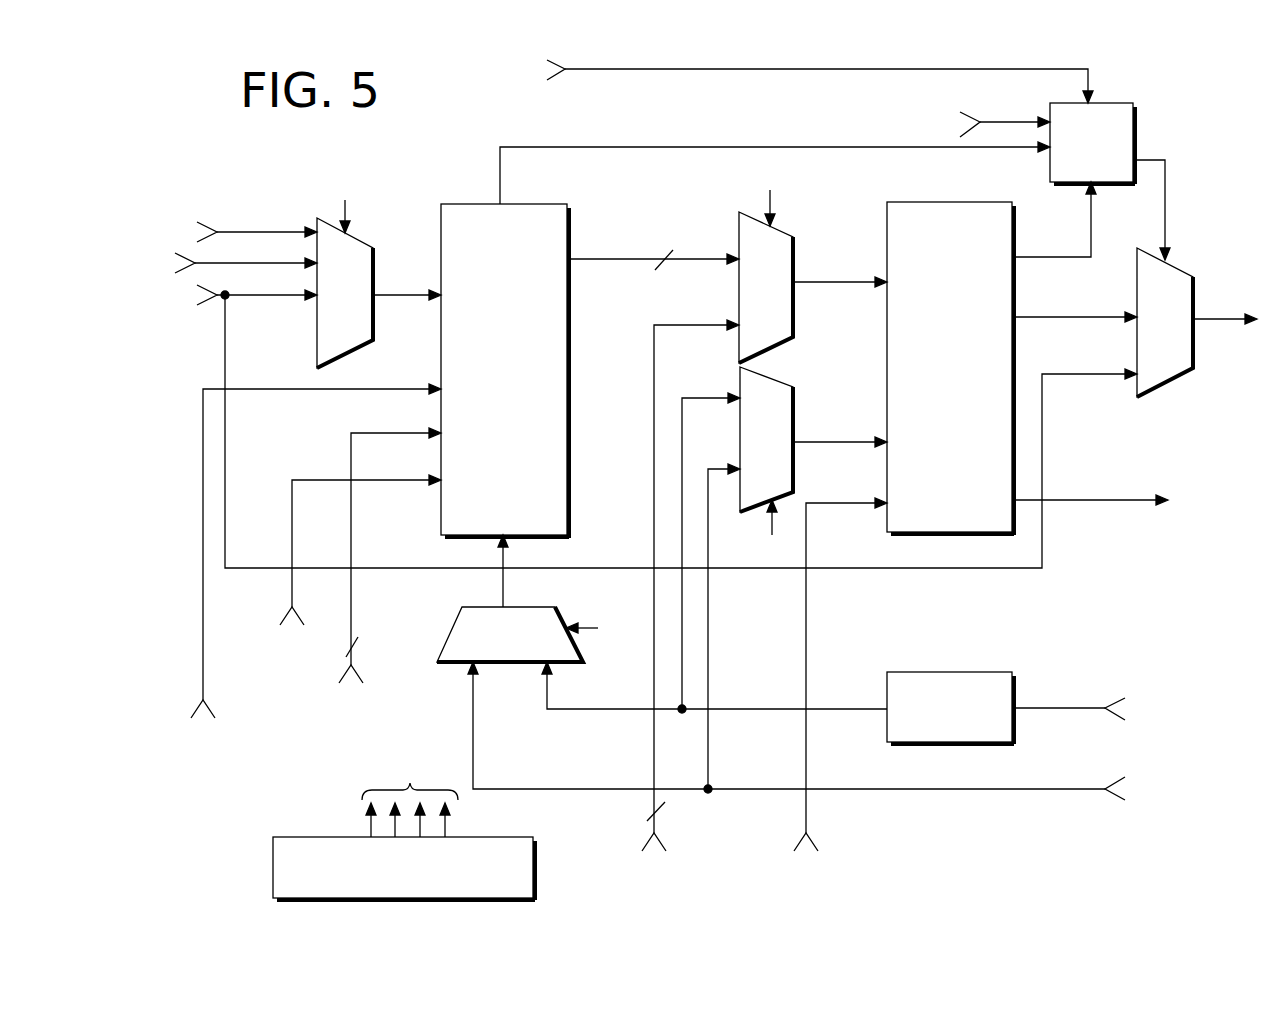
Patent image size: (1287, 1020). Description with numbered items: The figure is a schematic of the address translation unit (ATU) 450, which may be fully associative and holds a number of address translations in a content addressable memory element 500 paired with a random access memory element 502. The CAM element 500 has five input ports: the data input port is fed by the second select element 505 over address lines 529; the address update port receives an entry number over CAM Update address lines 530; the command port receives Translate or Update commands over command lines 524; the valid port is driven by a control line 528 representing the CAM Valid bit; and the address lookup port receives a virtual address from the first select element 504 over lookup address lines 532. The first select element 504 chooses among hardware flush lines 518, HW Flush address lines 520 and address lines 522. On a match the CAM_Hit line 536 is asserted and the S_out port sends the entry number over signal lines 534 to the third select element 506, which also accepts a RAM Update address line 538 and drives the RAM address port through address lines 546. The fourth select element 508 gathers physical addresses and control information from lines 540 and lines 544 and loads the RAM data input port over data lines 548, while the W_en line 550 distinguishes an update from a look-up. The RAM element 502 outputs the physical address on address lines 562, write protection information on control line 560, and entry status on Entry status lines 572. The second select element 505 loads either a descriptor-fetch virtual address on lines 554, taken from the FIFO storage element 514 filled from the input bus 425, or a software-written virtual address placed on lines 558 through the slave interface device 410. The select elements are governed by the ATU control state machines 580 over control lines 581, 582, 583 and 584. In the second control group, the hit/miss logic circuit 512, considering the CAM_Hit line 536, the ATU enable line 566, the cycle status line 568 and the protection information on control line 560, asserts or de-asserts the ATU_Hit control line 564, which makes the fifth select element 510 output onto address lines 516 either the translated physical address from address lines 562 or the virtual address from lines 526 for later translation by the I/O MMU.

The content addressable memory element 500 is at (505, 371).
The random access memory element 502 is at (950, 368).
The first select element 504 is at (345, 293).
The second select element 505 is at (510, 634).
The third select element 506 is at (766, 287).
The fourth select element 508 is at (766, 439).
The fifth select element 510 is at (1165, 322).
The hit/miss logic circuit 512 is at (1092, 143).
The FIFO storage element 514 is at (950, 708).
The ATU control state machines 580 is at (404, 825).
The hardware flush lines 518 is at (234, 232).
The HW Flush address lines 520 is at (222, 265).
The address lines 522 is at (234, 295).
The command lines 524 is at (203, 594).
The virtual address lines 526 is at (225, 363).
The control line 528 is at (313, 478).
The CAM Update address lines 530 is at (351, 594).
The address lines 529 is at (503, 584).
The lookup address lines 532 is at (405, 294).
The signal lines 534 is at (615, 258).
The CAM_Hit line 536 is at (685, 146).
The RAM Update address line 538 is at (658, 821).
The lines 540 is at (682, 713).
The lines 544 is at (710, 787).
The address lines 546 is at (818, 281).
The data lines 548 is at (818, 440).
The W_en line 550 is at (808, 821).
The lines 554 is at (549, 690).
The lines 558 is at (475, 735).
The control line 560 is at (1023, 254).
The address lines 562 is at (1043, 320).
The ATU_Hit control line 564 is at (1167, 212).
The address lines 516 is at (1221, 318).
The ATU enable line 566 is at (983, 124).
The cycle status line 568 is at (798, 78).
The Entry status lines 572 is at (1115, 502).
The control line 581 is at (353, 203).
The control line 582 is at (608, 630).
The control line 583 is at (776, 194).
The control line 584 is at (778, 531).
The input bus 425 is at (1153, 709).
The slave interface device 410 is at (1153, 789).
The address translation unit 450 is at (230, 842).